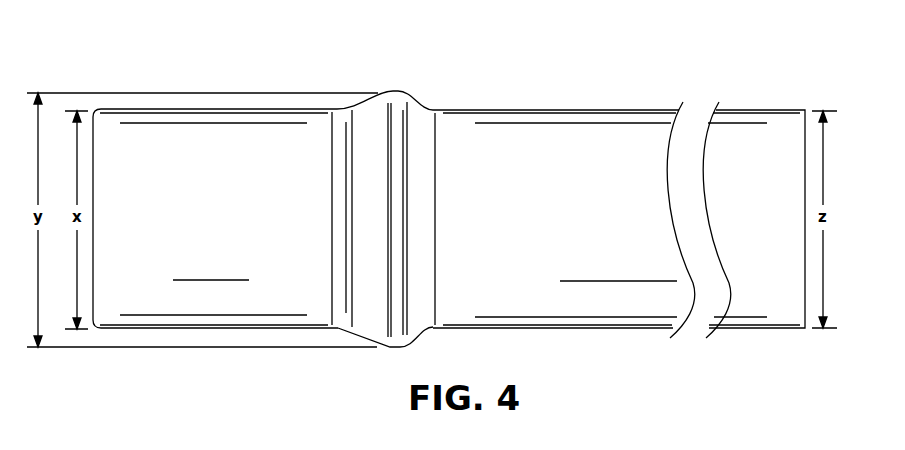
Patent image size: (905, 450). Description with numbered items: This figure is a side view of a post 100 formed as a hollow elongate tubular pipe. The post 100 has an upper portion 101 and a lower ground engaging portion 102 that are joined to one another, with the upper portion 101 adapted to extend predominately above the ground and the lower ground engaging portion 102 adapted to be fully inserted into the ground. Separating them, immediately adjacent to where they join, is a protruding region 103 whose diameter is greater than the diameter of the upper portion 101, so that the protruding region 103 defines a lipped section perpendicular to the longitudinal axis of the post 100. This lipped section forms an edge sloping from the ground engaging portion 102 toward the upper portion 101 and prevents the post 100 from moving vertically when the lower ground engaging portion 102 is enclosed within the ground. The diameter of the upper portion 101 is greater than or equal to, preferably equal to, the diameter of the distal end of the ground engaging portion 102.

The post 100 is at (449, 179).
The upper portion 101 is at (527, 130).
The lower ground engaging portion 102 is at (183, 135).
The protruding region 103 is at (404, 82).